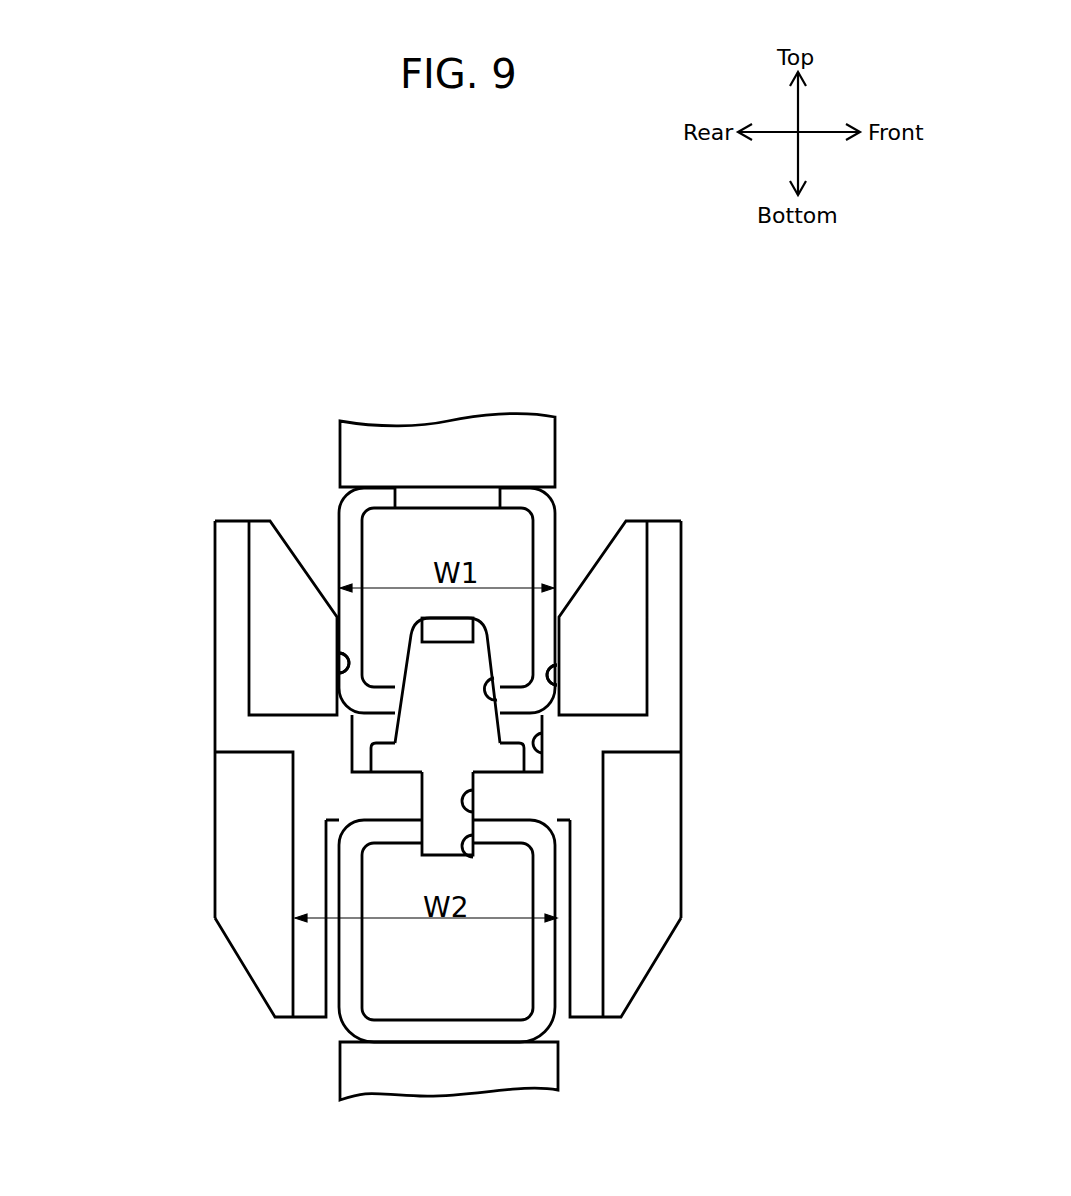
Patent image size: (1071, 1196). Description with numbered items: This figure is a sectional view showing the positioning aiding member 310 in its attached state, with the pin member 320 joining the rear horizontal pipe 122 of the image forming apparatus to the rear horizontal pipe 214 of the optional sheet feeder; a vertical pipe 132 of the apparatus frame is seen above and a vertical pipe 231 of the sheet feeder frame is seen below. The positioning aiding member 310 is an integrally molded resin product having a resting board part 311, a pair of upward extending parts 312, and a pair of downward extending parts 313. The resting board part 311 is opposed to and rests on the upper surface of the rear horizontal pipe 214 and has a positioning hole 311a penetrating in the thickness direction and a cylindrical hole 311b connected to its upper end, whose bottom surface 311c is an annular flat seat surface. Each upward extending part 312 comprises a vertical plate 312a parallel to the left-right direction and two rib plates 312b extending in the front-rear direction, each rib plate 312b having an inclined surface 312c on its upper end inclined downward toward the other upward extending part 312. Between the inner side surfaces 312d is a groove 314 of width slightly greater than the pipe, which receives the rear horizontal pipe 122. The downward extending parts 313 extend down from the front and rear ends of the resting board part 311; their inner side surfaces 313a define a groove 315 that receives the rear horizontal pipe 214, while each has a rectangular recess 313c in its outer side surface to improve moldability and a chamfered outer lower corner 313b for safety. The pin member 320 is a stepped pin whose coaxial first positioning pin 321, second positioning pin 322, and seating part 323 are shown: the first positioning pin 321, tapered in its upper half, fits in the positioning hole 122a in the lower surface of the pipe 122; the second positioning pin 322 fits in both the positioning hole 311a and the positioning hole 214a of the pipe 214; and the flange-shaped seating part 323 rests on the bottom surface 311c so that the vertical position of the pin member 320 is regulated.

The vertical pipe 132 is at (558, 430).
The rear horizontal pipe 122 is at (566, 552).
The positioning hole 122a is at (503, 663).
The positioning aiding member 310 is at (455, 788).
The upward extending part 312 is at (448, 664).
The vertical plate 312a is at (233, 568).
The rib plate 312b is at (300, 573).
The inclined surface 312c is at (292, 582).
The inner side surface 312d is at (340, 658).
The downward extending part 313 is at (460, 958).
The inner side surface 313a is at (328, 965).
The outer lower corner 313b is at (242, 967).
The rectangular recess 313c is at (263, 902).
The groove 314 is at (388, 632).
The groove 315 is at (385, 995).
The resting board part 311 is at (634, 739).
The positioning hole 311a is at (478, 810).
The cylindrical hole 311b is at (543, 733).
The bottom surface 311c is at (515, 705).
The pin member 320 is at (281, 737).
The first positioning pin 321 is at (430, 662).
The second positioning pin 322 is at (443, 815).
The seating part 323 is at (383, 760).
The rear horizontal pipe 214 is at (571, 931).
The positioning hole 214a is at (478, 858).
The vertical pipe 231 is at (560, 1072).